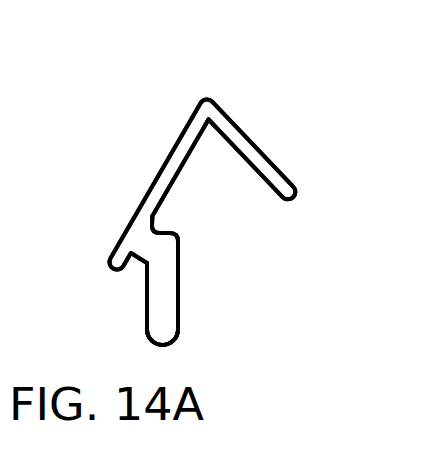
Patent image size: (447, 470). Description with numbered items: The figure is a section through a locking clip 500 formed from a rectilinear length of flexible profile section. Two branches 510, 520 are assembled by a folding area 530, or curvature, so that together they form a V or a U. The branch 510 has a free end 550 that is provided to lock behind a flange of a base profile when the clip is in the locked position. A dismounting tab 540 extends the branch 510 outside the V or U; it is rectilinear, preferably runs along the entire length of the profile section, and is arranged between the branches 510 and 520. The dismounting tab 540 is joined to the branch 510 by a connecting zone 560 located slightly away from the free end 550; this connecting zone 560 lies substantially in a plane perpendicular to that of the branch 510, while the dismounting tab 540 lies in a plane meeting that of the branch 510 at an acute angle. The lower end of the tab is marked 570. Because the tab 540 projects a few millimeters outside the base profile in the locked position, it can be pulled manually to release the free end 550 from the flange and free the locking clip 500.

The locking clip 500 is at (144, 118).
The branch 510 is at (158, 183).
The branch 520 is at (247, 150).
The folding area 530 is at (205, 113).
The dismounting tab 540 is at (166, 303).
The free end 550 is at (107, 267).
The connecting zone 560 is at (155, 232).
The leg end 570 is at (158, 345).